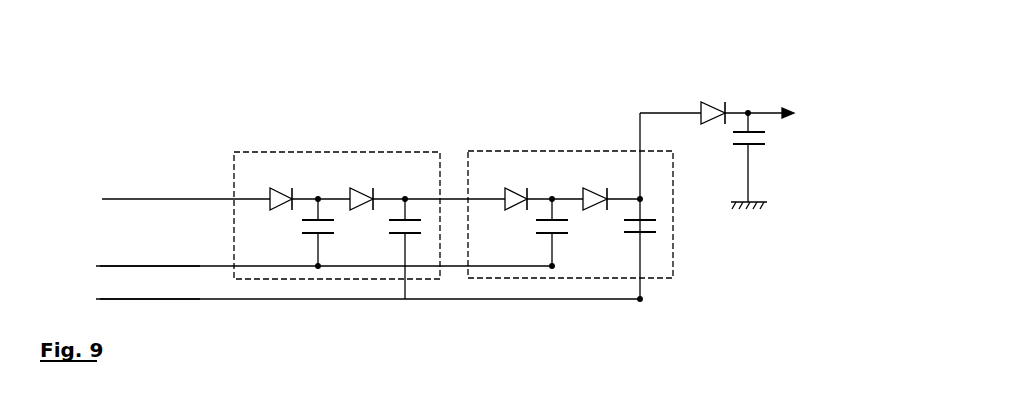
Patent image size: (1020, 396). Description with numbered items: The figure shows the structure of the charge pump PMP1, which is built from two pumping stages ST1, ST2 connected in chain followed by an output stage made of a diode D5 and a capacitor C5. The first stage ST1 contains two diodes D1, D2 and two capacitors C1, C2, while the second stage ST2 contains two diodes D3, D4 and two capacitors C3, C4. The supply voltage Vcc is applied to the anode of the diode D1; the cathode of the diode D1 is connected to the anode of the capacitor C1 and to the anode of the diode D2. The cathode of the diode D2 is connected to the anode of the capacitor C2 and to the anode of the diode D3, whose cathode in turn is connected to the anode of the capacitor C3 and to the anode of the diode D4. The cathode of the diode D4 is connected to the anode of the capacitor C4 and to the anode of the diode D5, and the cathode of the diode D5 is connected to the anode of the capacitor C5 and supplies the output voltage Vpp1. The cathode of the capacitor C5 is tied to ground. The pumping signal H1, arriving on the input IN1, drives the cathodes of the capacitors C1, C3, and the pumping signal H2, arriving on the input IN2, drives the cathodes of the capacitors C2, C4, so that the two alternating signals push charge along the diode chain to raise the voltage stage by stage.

The charge pump PMP1 is at (528, 103).
The first pumping stage ST1 is at (273, 180).
The second pumping stage ST2 is at (507, 178).
The diode D1 is at (281, 211).
The diode D2 is at (361, 211).
The diode D3 is at (516, 211).
The diode D4 is at (595, 211).
The output diode D5 is at (713, 123).
The capacitor C1 is at (323, 233).
The capacitor C2 is at (409, 248).
The capacitor C3 is at (557, 233).
The capacitor C4 is at (644, 207).
The output capacitor C5 is at (754, 160).
The supply voltage Vcc is at (173, 199).
The output voltage Vpp1 is at (779, 114).
The first pumping signal input IN1 is at (311, 267).
The second pumping signal input IN2 is at (355, 301).
The pumping signal H1 is at (150, 257).
The pumping signal H2 is at (150, 292).